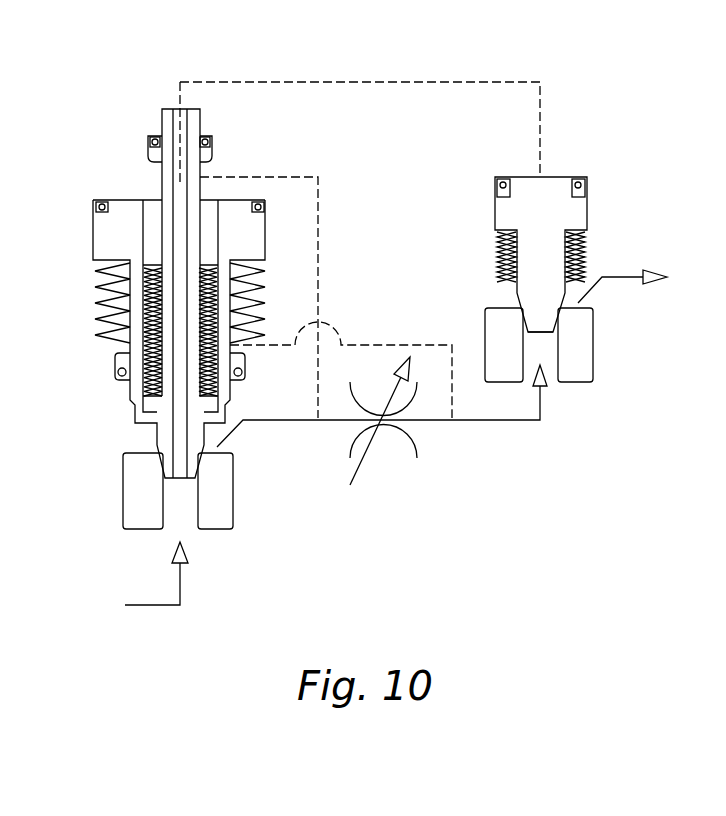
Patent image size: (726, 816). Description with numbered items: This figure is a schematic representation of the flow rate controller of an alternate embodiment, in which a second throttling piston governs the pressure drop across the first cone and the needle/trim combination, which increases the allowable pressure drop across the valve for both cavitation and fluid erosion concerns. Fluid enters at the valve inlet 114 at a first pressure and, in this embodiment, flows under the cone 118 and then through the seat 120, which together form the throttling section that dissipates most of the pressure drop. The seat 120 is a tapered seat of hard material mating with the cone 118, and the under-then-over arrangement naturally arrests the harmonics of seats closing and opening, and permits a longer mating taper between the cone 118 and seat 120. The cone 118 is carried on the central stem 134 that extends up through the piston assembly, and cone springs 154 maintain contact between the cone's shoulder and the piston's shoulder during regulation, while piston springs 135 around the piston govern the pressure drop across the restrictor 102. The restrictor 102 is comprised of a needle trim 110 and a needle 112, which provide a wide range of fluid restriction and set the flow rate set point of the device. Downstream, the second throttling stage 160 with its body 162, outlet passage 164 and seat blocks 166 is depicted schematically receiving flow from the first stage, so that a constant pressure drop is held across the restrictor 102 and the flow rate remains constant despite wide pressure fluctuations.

The restrictor 102 is at (470, 453).
The needle trim 110 is at (383, 399).
The needle 112 is at (363, 463).
The valve inlet 114 is at (141, 605).
The cone 118 is at (196, 462).
The seat 120 is at (209, 530).
The valve stem 134 is at (212, 136).
The piston springs 135 is at (266, 283).
The cone springs 154 is at (218, 266).
The relief valve 160 is at (594, 279).
The relief valve body 162 is at (555, 210).
The relief valve outlet 164 is at (542, 318).
The relief valve seat 166 is at (567, 335).